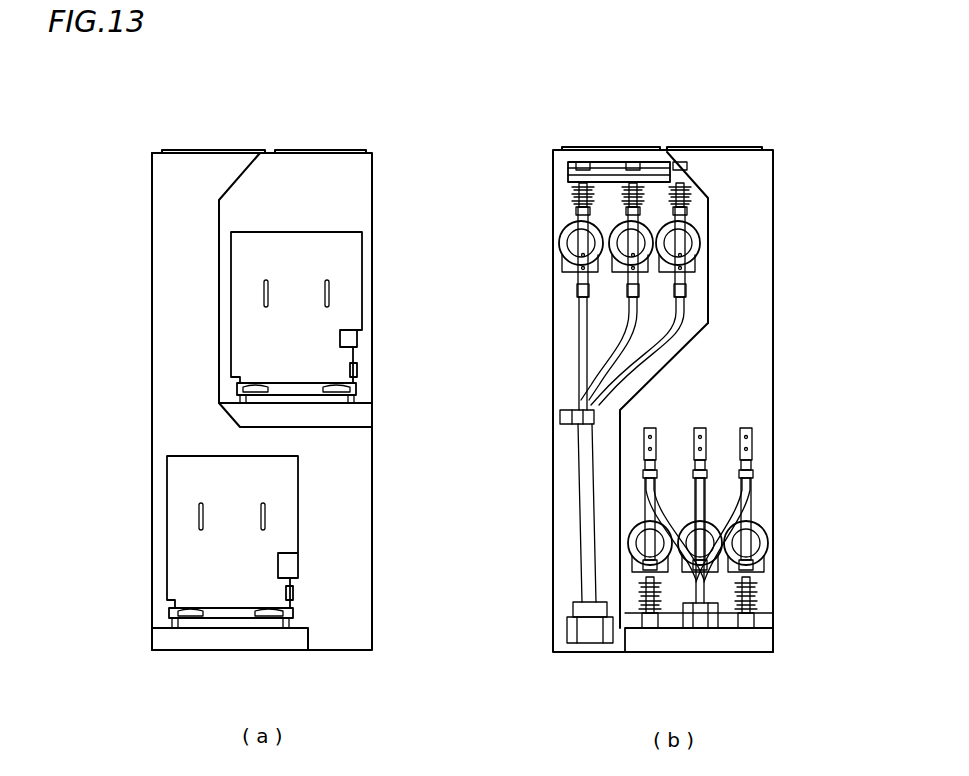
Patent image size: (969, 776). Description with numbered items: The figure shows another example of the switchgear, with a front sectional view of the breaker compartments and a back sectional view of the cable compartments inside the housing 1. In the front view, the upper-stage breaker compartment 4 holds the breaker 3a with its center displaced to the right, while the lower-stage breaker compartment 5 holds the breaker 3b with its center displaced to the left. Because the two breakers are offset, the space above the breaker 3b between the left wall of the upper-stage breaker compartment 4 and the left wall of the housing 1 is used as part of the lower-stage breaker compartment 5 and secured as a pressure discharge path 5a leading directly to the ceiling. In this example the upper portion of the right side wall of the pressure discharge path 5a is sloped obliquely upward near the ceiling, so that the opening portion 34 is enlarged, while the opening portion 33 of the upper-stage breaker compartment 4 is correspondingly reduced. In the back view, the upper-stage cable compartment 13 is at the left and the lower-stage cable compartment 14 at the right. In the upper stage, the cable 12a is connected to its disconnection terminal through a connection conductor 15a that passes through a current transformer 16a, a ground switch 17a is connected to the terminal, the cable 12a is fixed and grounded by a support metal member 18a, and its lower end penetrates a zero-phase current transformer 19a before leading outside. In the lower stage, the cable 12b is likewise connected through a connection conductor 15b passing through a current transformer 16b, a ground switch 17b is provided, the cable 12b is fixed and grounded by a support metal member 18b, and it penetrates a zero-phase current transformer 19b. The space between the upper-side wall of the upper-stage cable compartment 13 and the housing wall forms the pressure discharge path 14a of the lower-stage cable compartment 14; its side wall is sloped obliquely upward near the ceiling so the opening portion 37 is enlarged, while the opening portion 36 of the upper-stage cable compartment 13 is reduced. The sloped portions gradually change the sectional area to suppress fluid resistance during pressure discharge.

The housing 1 is at (150, 165).
The opening portion 34 is at (205, 153).
The opening portion 33 is at (337, 158).
The upper-stage breaker compartment 4 is at (342, 214).
The pressure discharge path 5a is at (180, 305).
The breaker 3a is at (357, 300).
The breaker 3b is at (167, 513).
The lower-stage breaker compartment 5 is at (338, 517).
The opening portion 36 is at (610, 155).
The opening portion 37 is at (712, 158).
The ground switch 17a is at (578, 195).
The connection conductor 15a is at (580, 245).
The current transformer 16a is at (560, 256).
The upper-stage cable compartment 13 is at (553, 360).
The support metal member 18a is at (558, 415).
The cable 12a is at (578, 525).
The pressure discharge path 14a is at (738, 235).
The lower-stage cable compartment 14 is at (725, 395).
The cable 12b is at (745, 492).
The connection conductor 15b is at (745, 518).
The current transformer 16b is at (770, 545).
The ground switch 17b is at (755, 600).
The zero-phase current transformer 19a is at (575, 643).
The support metal member 18b is at (690, 635).
The zero-phase current transformer 19b is at (722, 650).